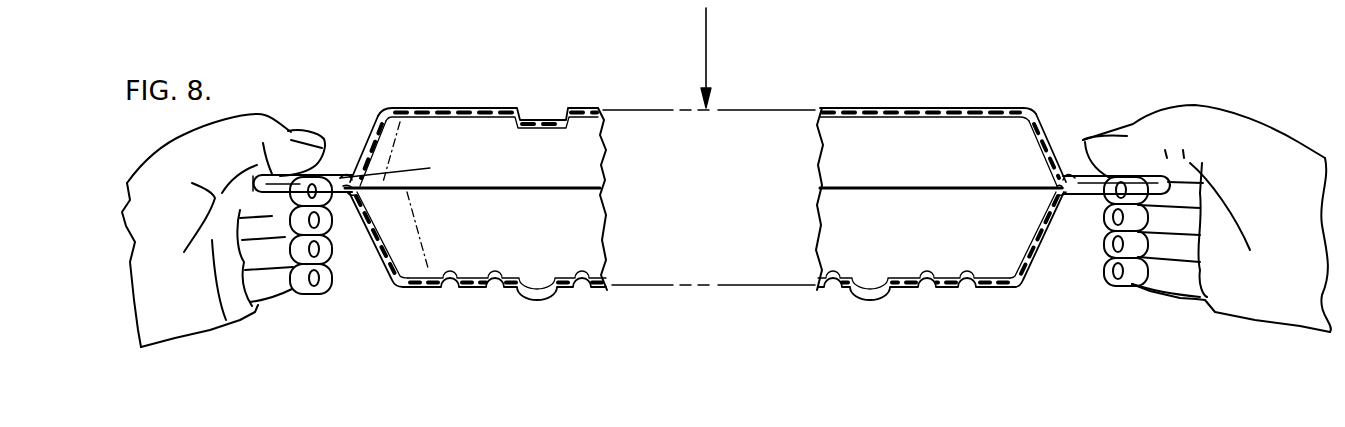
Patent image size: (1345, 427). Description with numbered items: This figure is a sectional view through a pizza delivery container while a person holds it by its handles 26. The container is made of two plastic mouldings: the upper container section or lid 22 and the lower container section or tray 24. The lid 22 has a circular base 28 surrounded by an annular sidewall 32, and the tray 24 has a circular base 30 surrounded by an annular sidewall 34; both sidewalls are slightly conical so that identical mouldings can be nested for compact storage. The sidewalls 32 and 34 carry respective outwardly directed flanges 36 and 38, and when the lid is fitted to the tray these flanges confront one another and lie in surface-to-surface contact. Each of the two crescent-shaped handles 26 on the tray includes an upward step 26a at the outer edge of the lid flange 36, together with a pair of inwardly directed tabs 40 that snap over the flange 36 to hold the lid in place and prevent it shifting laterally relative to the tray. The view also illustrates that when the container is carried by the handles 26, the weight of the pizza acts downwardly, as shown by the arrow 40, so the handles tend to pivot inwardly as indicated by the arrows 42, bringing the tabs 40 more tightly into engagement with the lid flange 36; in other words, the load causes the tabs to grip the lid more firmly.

The upper container section 22 is at (600, 95).
The lower container section 24 is at (592, 302).
The handle 26 is at (278, 174).
The upward step 26a is at (213, 202).
The circular base 28 is at (466, 106).
The circular base 30 is at (470, 290).
The annular sidewall 32 is at (372, 142).
The annular sidewall 34 is at (378, 253).
The flange 36 is at (343, 190).
The flange 38 is at (349, 195).
The inwardly directed tab 40 is at (706, 45).
The arrow 42 is at (345, 160).